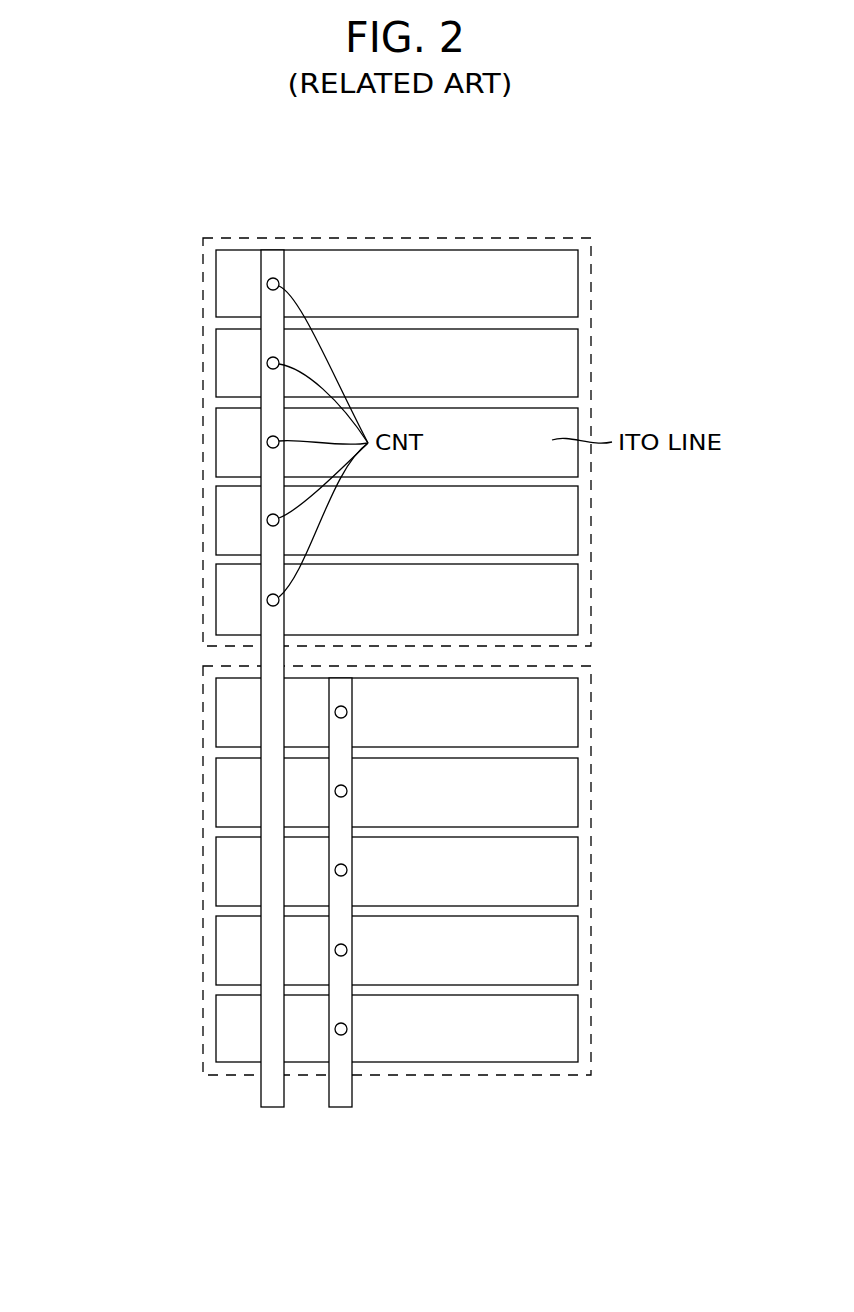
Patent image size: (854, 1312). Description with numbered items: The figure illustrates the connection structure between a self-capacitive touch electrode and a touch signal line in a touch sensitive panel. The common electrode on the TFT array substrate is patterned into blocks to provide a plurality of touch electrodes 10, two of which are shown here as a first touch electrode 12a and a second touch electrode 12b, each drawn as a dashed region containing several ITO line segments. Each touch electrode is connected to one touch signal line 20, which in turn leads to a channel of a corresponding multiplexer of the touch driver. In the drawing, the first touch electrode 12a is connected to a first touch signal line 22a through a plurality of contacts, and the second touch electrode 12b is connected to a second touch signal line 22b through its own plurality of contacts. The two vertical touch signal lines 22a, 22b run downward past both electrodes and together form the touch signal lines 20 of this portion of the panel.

The touch electrode 10 is at (329, 656).
The first touch electrode 12a is at (203, 452).
The second touch electrode 12b is at (358, 870).
The touch signal line 20 is at (315, 737).
The first touch signal line 22a is at (272, 1107).
The second touch signal line 22b is at (340, 1107).